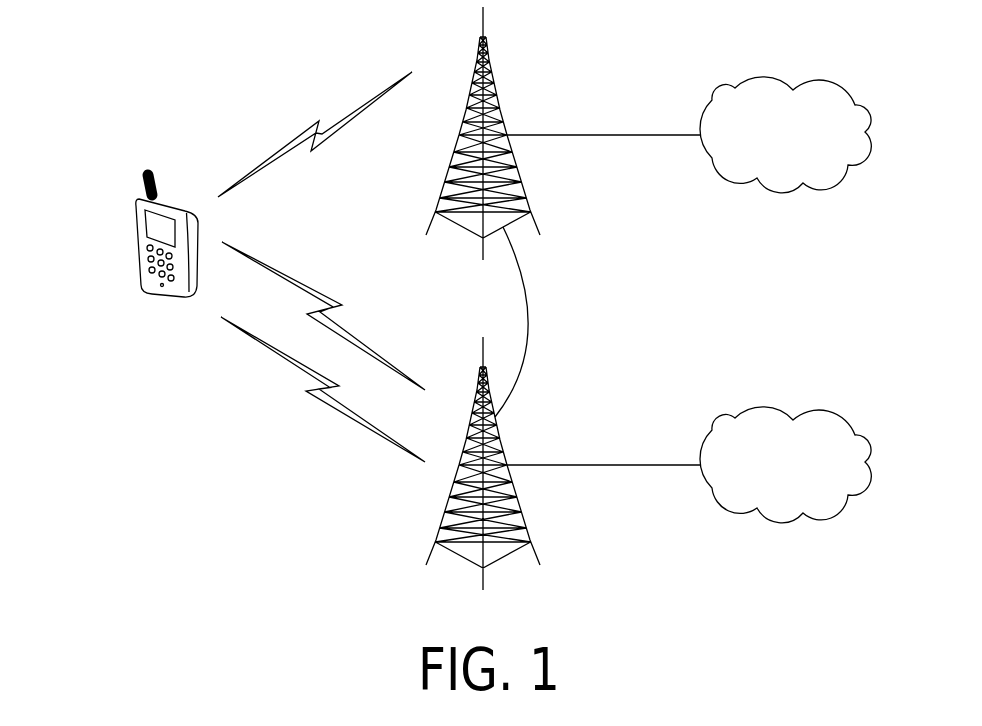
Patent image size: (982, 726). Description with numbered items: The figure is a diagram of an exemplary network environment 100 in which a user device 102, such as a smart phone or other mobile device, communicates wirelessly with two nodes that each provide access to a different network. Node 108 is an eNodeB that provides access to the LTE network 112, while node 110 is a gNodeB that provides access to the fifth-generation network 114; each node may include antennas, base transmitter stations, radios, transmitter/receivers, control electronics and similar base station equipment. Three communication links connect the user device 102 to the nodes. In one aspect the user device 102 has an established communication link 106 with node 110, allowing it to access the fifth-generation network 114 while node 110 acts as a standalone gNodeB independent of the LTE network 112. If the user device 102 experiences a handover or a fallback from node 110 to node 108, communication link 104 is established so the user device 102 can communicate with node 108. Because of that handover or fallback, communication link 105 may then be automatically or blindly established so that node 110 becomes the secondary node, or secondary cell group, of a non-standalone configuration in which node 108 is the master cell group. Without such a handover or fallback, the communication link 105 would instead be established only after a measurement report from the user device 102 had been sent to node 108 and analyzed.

The network environment 100 is at (90, 76).
The user device 102 is at (136, 233).
The communication link 104 is at (337, 132).
The communication link 105 is at (343, 405).
The communication link 106 is at (297, 285).
The node 108 is at (498, 93).
The node 110 is at (518, 505).
The LTE network 112 is at (818, 80).
The 5G network 114 is at (818, 410).